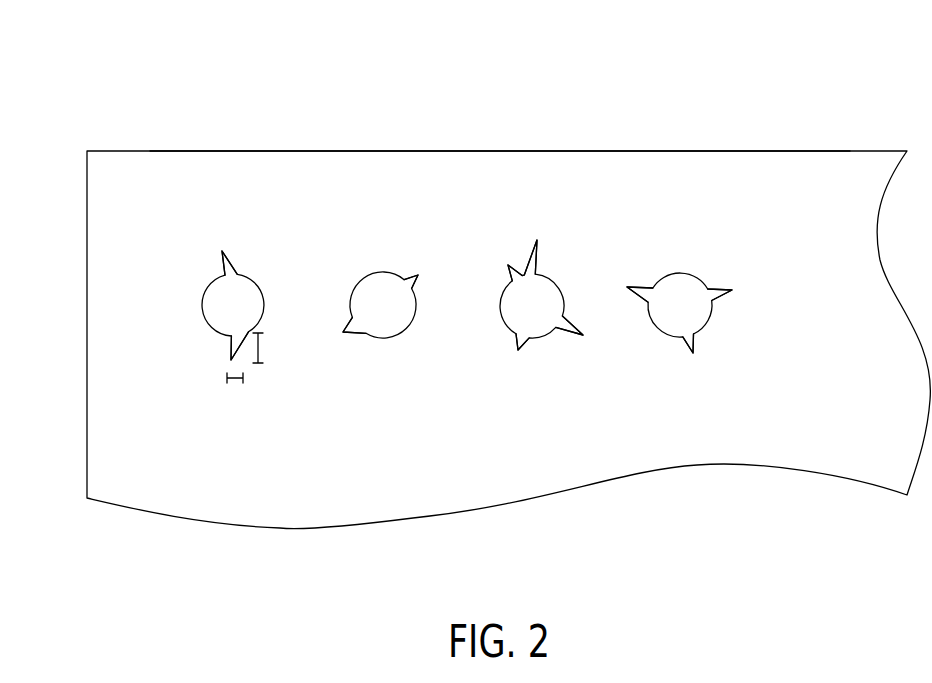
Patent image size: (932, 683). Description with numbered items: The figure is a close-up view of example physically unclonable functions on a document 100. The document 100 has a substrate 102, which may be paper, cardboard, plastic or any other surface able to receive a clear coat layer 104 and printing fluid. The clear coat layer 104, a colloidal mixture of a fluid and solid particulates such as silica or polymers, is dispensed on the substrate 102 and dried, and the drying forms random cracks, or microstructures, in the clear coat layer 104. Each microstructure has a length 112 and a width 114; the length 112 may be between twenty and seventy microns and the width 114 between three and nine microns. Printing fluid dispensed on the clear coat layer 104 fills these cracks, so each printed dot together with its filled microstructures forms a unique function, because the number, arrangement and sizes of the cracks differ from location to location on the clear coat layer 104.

The document 100 is at (235, 101).
The substrate 102 is at (658, 150).
The clear coat layer 104 is at (447, 167).
The length 112 is at (264, 350).
The width 114 is at (233, 384).